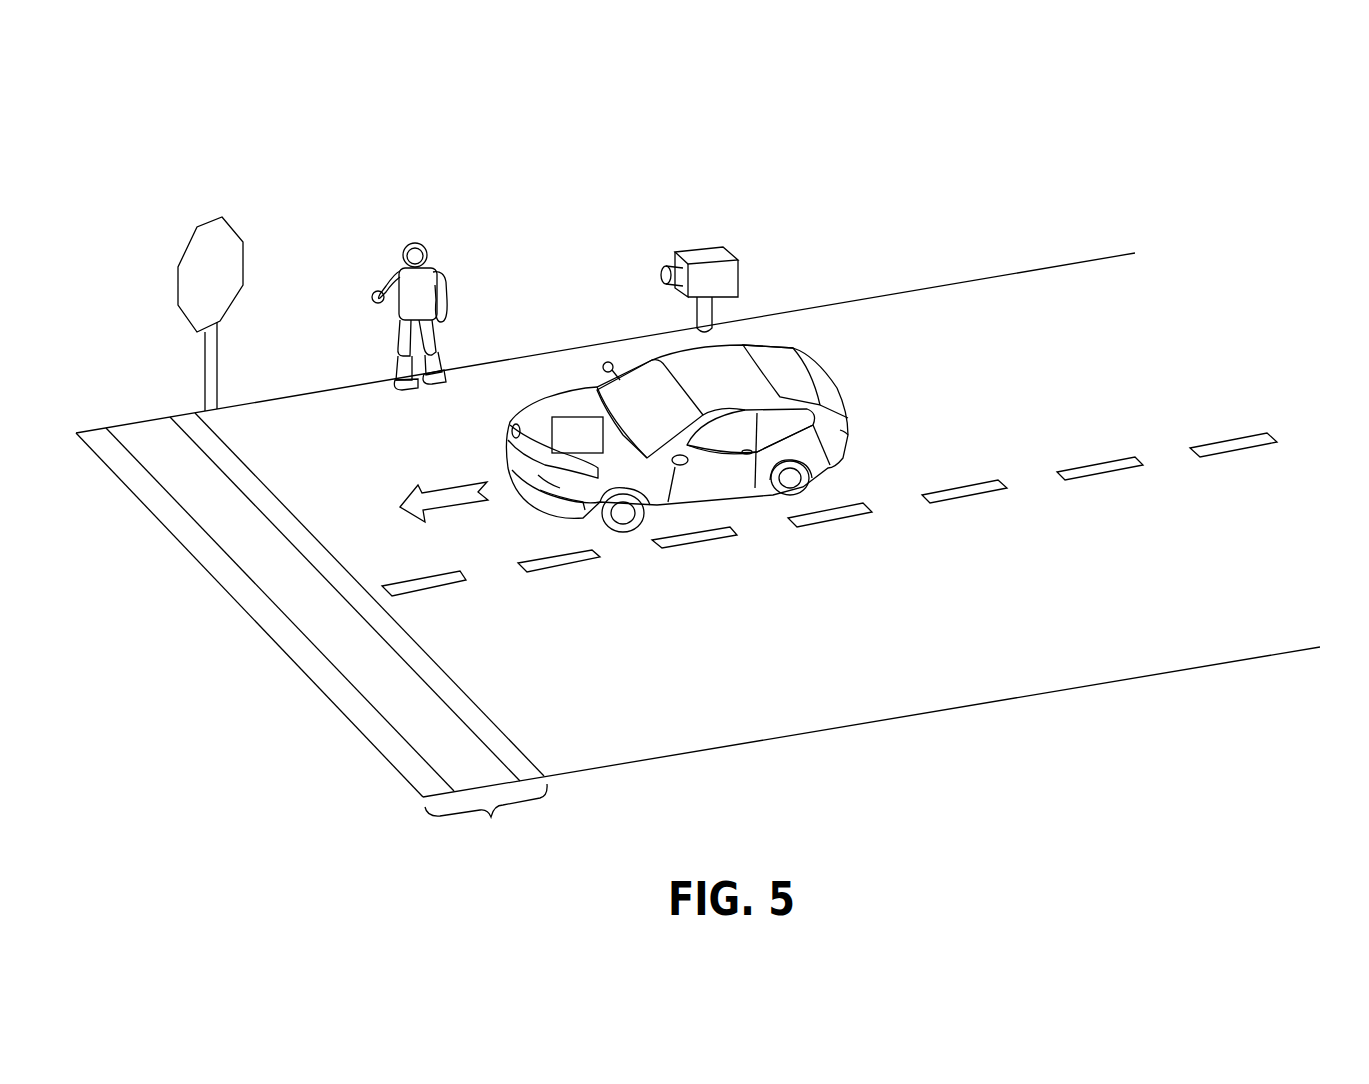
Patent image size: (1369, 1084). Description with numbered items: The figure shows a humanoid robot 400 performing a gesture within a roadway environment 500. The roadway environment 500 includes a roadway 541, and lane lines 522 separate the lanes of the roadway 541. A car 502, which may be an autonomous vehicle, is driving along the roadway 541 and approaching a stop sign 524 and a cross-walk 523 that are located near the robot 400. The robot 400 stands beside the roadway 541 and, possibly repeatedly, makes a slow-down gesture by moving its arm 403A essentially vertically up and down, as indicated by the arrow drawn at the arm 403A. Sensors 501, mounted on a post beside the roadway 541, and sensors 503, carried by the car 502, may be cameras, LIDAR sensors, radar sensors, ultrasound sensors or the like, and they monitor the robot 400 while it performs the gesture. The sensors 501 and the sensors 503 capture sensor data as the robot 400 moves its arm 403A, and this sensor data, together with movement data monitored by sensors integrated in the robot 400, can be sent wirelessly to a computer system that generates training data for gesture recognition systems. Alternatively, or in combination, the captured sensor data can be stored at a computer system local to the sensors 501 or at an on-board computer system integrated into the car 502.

The roadway environment 500 is at (1170, 167).
The sensors 501 is at (710, 248).
The car 502 is at (698, 427).
The sensors 503 is at (563, 446).
The lane lines 522 is at (562, 568).
The cross-walk 523 is at (336, 646).
The stop sign 524 is at (206, 217).
The roadway 541 is at (925, 658).
The humanoid robot 400 is at (377, 259).
The arm 403A is at (393, 280).